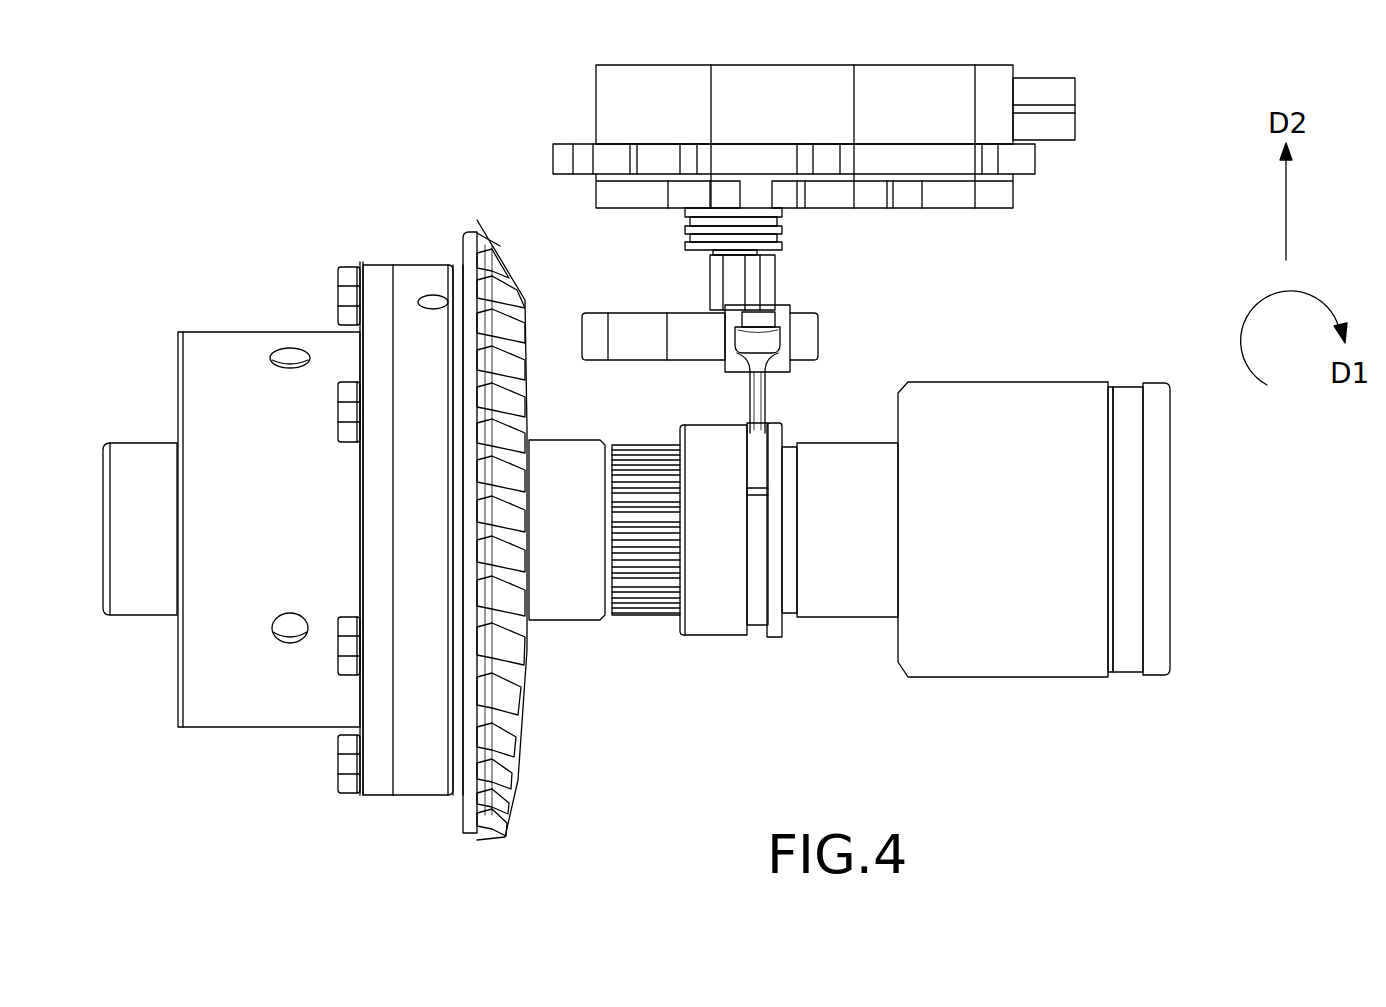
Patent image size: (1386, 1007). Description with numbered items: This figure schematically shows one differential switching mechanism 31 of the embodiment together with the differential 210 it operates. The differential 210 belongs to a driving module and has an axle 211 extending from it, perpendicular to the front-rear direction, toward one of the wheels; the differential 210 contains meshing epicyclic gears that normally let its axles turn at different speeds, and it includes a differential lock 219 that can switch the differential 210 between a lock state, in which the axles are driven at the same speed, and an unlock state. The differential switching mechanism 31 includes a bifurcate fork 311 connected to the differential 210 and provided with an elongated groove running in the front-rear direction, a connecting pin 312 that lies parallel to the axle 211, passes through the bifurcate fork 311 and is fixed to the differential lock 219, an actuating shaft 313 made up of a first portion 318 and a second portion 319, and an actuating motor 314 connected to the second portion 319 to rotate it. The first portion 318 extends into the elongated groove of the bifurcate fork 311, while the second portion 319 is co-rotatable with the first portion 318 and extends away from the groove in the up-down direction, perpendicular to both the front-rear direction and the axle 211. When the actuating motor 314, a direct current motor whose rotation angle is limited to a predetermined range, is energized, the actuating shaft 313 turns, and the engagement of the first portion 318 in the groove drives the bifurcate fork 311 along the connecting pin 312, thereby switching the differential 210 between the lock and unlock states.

The differential switching mechanism 31 is at (843, 323).
The actuating motor 314 is at (612, 96).
The second portion 319 is at (732, 265).
The actuating shaft 313 is at (693, 285).
The first portion 318 is at (760, 318).
The connecting pin 312 is at (645, 355).
The bifurcate fork 311 is at (763, 470).
The differential 210 is at (409, 282).
The differential lock 219 is at (713, 628).
The axle 211 is at (858, 603).